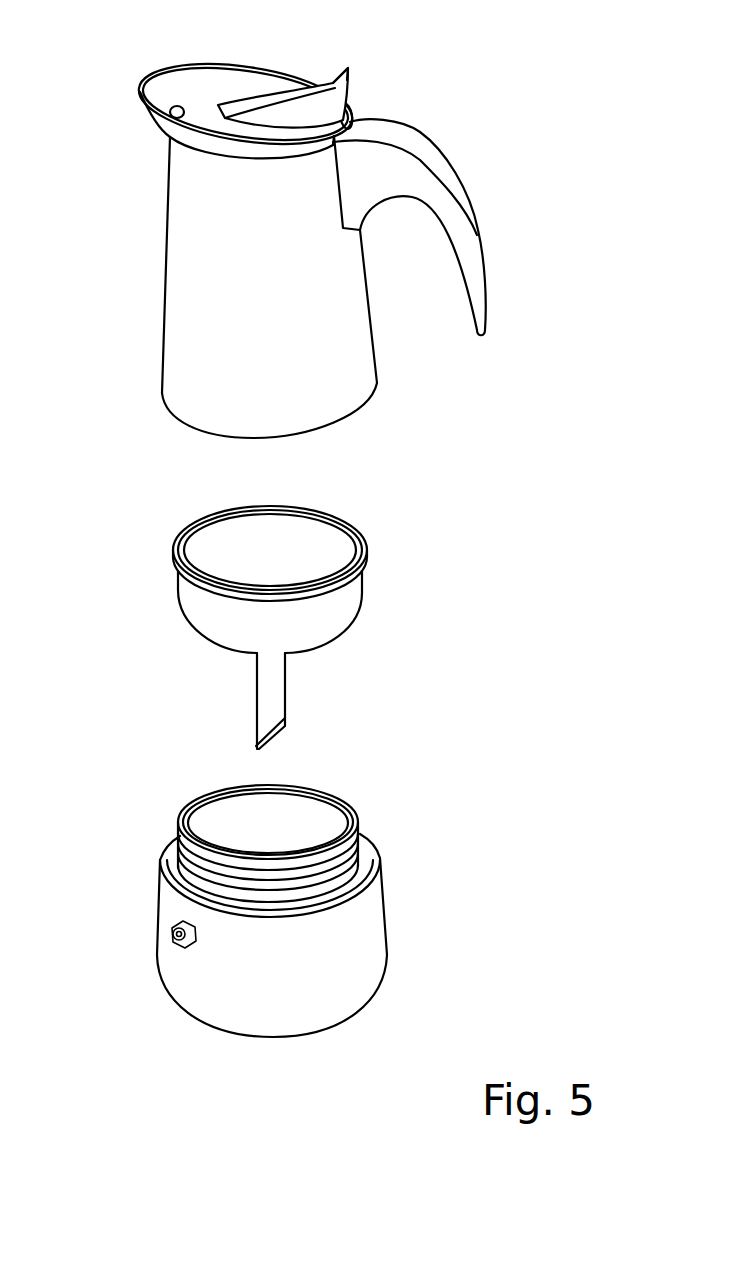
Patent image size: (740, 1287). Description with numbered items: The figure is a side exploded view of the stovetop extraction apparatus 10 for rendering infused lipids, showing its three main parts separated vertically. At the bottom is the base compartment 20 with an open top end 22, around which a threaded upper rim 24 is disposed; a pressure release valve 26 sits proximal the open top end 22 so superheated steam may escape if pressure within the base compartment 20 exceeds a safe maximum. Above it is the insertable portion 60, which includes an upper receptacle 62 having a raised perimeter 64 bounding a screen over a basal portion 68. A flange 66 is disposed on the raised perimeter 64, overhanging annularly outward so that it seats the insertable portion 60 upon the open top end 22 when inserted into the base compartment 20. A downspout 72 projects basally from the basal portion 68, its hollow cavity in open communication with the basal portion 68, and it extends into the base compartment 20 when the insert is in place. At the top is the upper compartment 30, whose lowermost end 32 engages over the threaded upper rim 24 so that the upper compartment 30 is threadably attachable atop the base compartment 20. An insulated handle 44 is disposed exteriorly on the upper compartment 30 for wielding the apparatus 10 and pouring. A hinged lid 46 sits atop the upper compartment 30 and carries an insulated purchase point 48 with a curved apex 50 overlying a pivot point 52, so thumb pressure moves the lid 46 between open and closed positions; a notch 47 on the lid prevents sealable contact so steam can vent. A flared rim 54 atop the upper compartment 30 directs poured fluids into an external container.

The stovetop extraction apparatus 10 is at (527, 77).
The base compartment 20 is at (387, 917).
The open top end 22 is at (336, 782).
The threaded upper rim 24 is at (360, 832).
The pressure release valve 26 is at (173, 938).
The upper compartment 30 is at (160, 355).
The lowermost end 32 is at (332, 428).
The insulated handle 44 is at (482, 263).
The hinged lid 46 is at (195, 110).
The notch 47 is at (138, 88).
The insulated purchase point 48 is at (333, 87).
The curved apex 50 is at (348, 72).
The pivot point 52 is at (352, 120).
The flared rim 54 is at (162, 127).
The insertable portion 60 is at (200, 680).
The upper receptacle 62 is at (235, 557).
The raised perimeter 64 is at (178, 596).
The flange 66 is at (365, 565).
The basal portion 68 is at (350, 623).
The downspout 72 is at (287, 695).